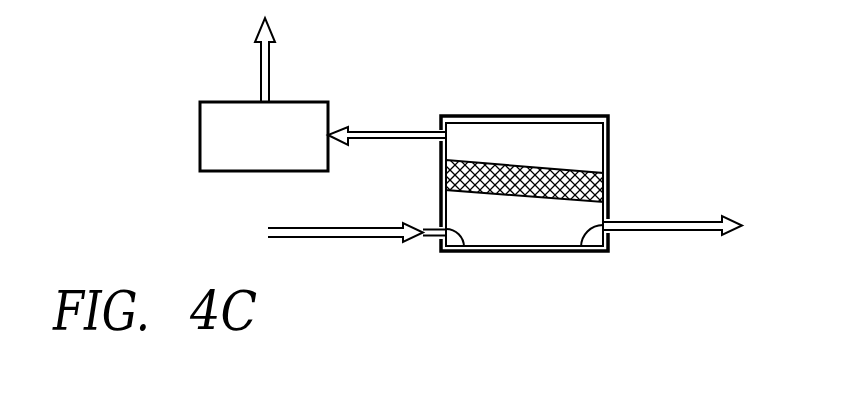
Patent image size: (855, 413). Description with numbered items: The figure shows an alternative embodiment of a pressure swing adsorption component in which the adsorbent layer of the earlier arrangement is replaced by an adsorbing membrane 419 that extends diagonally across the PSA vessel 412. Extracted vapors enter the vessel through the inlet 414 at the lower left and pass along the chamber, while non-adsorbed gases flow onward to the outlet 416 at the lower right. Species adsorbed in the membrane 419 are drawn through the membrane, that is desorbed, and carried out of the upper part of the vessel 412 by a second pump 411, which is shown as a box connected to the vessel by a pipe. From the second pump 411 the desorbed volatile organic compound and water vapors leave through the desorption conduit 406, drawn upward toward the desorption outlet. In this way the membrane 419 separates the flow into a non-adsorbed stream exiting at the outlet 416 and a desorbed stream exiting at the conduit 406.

The desorption conduit 406 is at (259, 48).
The second pump 411 is at (210, 127).
The PSA vessel 412 is at (477, 116).
The inlet 414 is at (460, 253).
The outlet 416 is at (588, 252).
The adsorbing membrane 419 is at (572, 168).